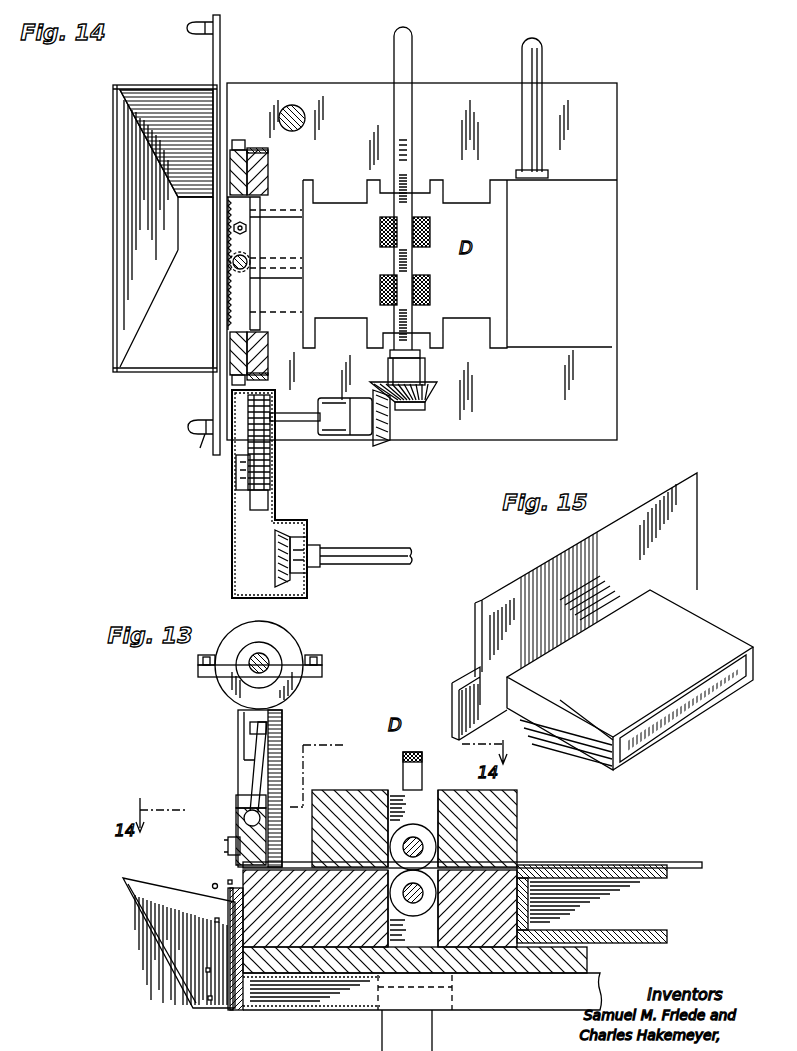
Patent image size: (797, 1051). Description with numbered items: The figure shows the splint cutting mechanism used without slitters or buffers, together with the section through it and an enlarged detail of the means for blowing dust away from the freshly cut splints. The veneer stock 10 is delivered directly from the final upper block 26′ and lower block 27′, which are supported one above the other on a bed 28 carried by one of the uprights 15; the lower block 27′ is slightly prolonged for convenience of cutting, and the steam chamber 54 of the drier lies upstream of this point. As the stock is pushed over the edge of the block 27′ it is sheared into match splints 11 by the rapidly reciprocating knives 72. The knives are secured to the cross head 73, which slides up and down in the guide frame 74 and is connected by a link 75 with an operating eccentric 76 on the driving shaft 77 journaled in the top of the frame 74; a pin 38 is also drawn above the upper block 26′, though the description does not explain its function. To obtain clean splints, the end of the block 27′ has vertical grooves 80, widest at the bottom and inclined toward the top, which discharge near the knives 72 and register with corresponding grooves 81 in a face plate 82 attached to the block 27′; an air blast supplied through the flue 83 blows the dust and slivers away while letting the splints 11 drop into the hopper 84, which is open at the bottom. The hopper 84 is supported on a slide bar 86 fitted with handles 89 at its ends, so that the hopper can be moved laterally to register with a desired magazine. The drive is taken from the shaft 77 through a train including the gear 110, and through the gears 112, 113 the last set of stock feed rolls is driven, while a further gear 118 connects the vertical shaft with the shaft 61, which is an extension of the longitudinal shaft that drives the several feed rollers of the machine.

In FIG. 14, the slide bar 86 is at (221, 60).
In FIG. 14, the handle 89 is at (196, 433).
In FIG. 14, the cross head 73 is at (244, 262).
In FIG. 13, the cross head 73 is at (237, 827).
In FIG. 14, the gear 110 is at (248, 420).
In FIG. 14, the gear 112 is at (377, 440).
In FIG. 14, the gear 113 is at (430, 402).
In FIG. 14, the gear 118 is at (290, 532).
In FIG. 14, the shaft 61 is at (370, 548).
In FIG. 15, the grooves 81 is at (547, 585).
In FIG. 15, the face plate 82 is at (496, 646).
In FIG. 13, the face plate 82 is at (242, 948).
In FIG. 15, the flue 83 is at (597, 752).
In FIG. 13, the flue 83 is at (422, 991).
In FIG. 13, the operating eccentric 76 is at (282, 660).
In FIG. 13, the driving shaft 77 is at (268, 657).
In FIG. 13, the guide frame 74 is at (283, 732).
In FIG. 13, the link 75 is at (257, 745).
In FIG. 13, the knives 72 is at (237, 862).
In FIG. 13, the match splint 11 is at (213, 885).
In FIG. 13, the pin 38 is at (418, 762).
In FIG. 13, the upper block 26′ is at (508, 814).
In FIG. 13, the veneer stock 10 is at (689, 862).
In FIG. 13, the lower block 27′ is at (310, 937).
In FIG. 13, the steam chamber 54 is at (667, 900).
In FIG. 13, the bed 28 is at (588, 959).
In FIG. 13, the upright 15 is at (382, 1027).
In FIG. 13, the vertical grooves 80 is at (262, 977).
In FIG. 13, the hopper 84 is at (158, 945).